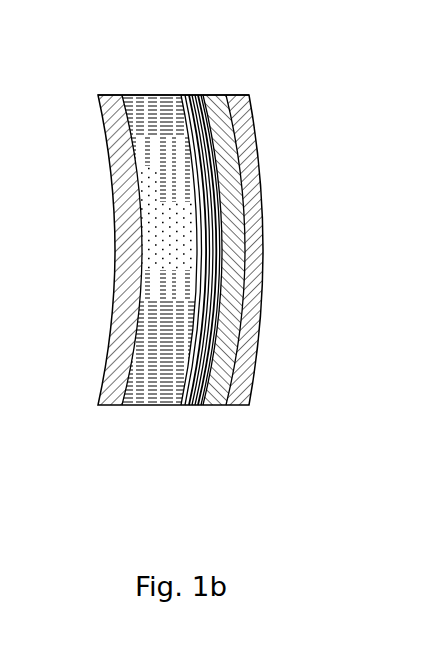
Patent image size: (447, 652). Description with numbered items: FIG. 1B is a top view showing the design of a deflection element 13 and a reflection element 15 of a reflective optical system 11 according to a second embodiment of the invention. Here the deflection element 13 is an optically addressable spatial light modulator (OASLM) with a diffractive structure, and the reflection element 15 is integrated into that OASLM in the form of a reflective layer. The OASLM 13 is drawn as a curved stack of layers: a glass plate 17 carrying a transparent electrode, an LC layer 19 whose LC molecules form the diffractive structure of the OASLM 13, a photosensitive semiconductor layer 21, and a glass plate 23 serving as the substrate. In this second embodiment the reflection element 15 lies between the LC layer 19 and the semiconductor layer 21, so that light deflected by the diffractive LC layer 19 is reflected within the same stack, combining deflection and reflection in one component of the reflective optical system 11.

The reflective optical system 11 is at (180, 205).
The deflection element 13 is at (158, 72).
The reflection element 15 is at (190, 405).
The glass plate 17 is at (110, 405).
The LC layer 19 is at (152, 405).
The photosensitive semiconductor layer 21 is at (207, 405).
The glass plate 23 is at (235, 405).